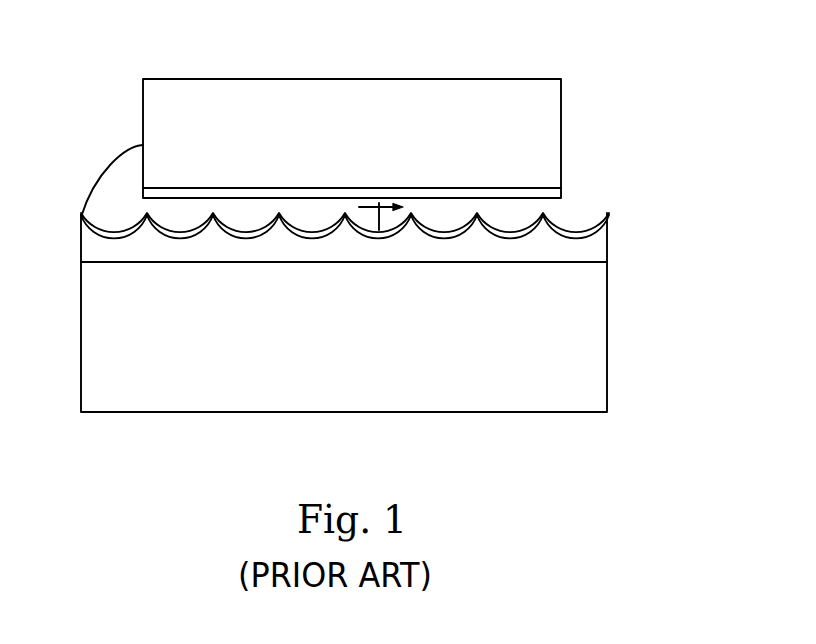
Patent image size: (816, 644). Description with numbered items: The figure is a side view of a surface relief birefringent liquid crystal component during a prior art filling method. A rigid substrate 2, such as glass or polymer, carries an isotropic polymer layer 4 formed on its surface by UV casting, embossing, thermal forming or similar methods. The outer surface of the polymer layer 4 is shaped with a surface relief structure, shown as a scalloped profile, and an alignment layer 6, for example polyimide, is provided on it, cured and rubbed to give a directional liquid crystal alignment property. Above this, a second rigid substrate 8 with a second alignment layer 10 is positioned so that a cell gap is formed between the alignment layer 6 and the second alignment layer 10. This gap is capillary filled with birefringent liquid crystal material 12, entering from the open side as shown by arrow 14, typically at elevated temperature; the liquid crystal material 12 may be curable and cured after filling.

The rigid substrate 2 is at (607, 340).
The isotropic polymer layer 4 is at (600, 248).
The alignment layer 6 is at (607, 217).
The second rigid substrate 8 is at (561, 138).
The second alignment layer 10 is at (561, 195).
The birefringent liquid crystal material 12 is at (105, 202).
The arrow 14 is at (375, 200).